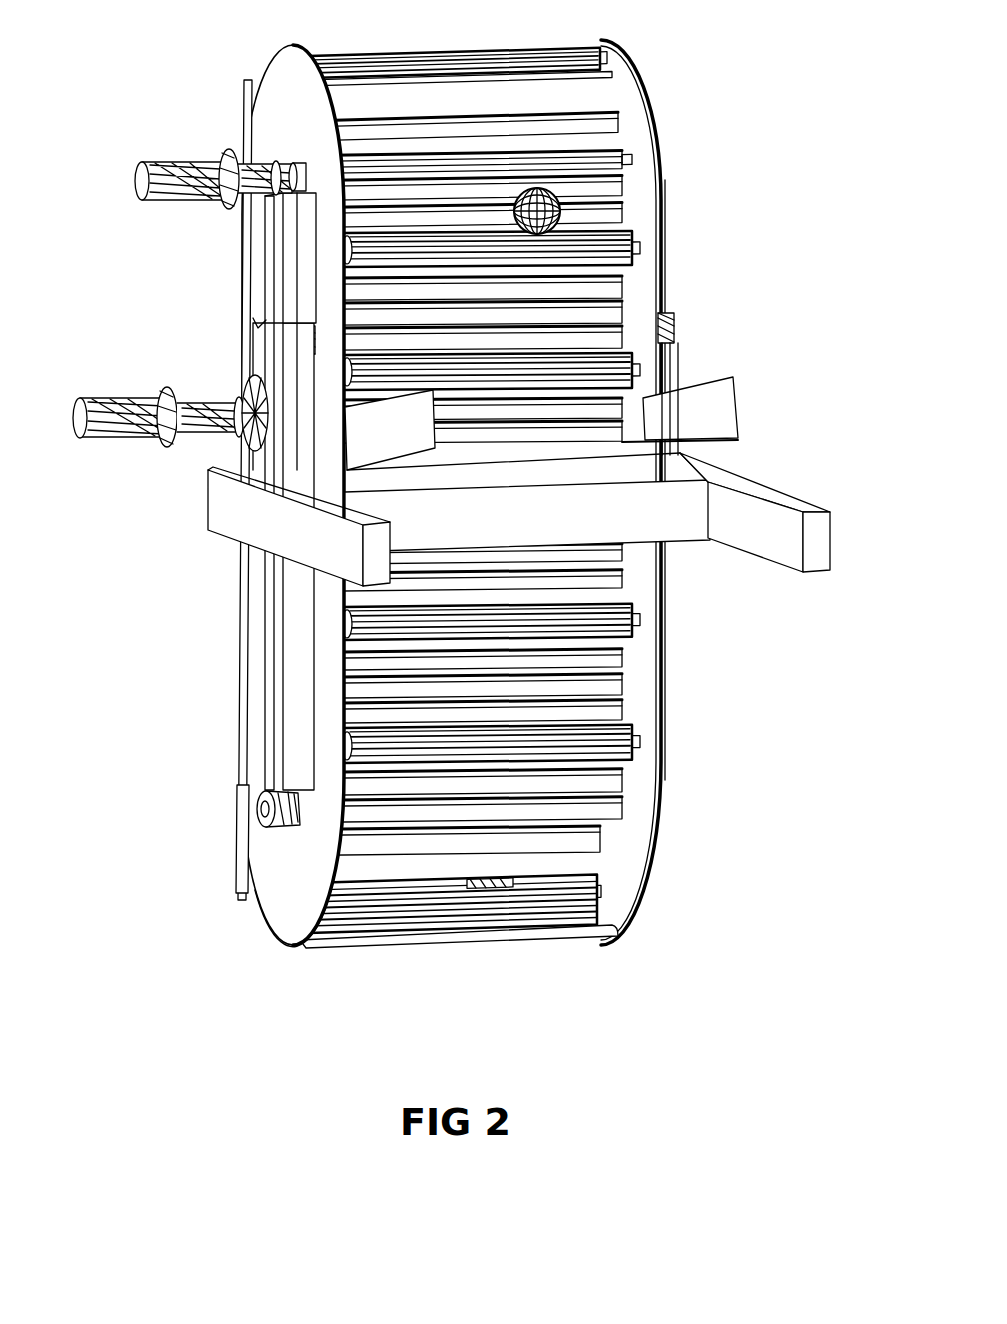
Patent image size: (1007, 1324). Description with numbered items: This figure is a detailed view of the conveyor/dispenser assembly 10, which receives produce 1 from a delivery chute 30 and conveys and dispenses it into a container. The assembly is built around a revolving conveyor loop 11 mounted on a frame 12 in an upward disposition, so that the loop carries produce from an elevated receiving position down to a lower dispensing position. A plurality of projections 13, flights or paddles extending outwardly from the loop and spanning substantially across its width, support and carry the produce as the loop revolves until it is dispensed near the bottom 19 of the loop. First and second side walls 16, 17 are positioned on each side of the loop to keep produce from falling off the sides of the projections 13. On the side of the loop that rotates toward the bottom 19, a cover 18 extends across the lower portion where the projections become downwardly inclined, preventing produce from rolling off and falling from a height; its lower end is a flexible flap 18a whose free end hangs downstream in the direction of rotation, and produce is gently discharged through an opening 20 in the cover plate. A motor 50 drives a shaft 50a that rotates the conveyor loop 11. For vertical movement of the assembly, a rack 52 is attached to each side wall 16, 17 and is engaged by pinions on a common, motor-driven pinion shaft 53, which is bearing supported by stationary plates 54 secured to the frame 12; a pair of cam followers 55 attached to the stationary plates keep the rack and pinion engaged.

The produce 1 is at (561, 215).
The conveyor/dispenser assembly 10 is at (477, 483).
The revolving conveyor loop 11 is at (600, 195).
The frame 12 is at (730, 497).
The projections 13 is at (587, 490).
The first side wall 16 is at (285, 78).
The second side wall 17 is at (636, 97).
The cover 18 is at (242, 644).
The flap 18a is at (240, 873).
The bottom of the conveyor loop 19 is at (287, 921).
The opening 20 is at (630, 929).
The delivery chute 30 is at (717, 400).
The motor 50 is at (150, 162).
The shaft 50a is at (228, 152).
The rack 52 is at (268, 722).
The pinion shaft 53 is at (223, 403).
The stationary plates 54 is at (268, 342).
The cam followers 55 is at (318, 340).